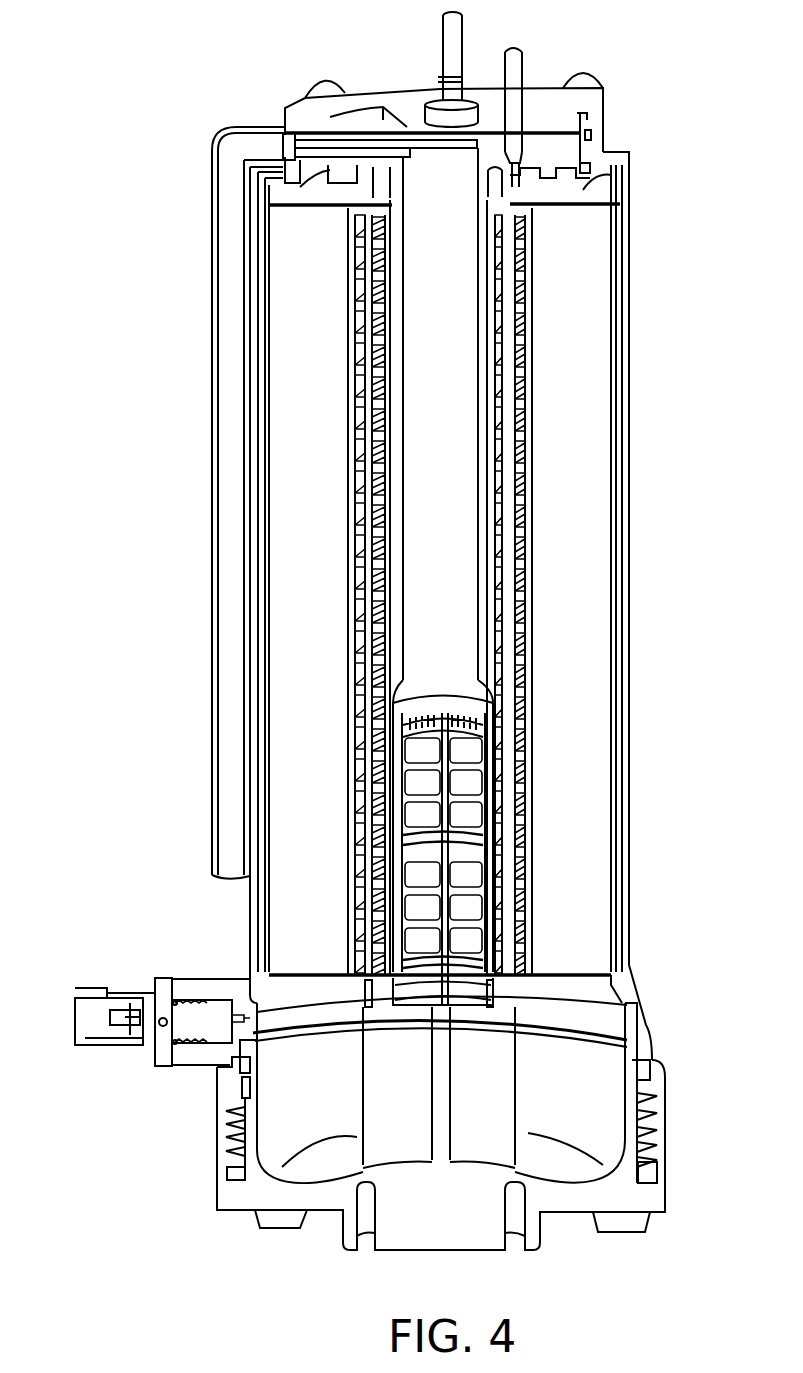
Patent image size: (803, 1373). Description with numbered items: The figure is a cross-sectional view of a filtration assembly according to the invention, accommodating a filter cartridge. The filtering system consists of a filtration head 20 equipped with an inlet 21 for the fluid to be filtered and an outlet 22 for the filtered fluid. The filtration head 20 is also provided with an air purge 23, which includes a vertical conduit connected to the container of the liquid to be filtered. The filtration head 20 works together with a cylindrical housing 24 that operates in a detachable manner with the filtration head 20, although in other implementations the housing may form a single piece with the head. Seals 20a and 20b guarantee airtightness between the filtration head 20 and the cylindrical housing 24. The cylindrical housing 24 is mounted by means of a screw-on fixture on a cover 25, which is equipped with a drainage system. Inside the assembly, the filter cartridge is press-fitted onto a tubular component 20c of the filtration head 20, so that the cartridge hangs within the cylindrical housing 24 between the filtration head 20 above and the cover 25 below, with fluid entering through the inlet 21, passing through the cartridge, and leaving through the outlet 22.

The filtration head 20 is at (570, 153).
The seal 20a is at (585, 170).
The seal 20b is at (590, 133).
The tubular component 20c is at (480, 250).
The inlet 21 is at (450, 33).
The outlet 22 is at (237, 158).
The air purge 23 is at (512, 50).
The cylindrical housing 24 is at (630, 336).
The cover 25 is at (292, 1137).